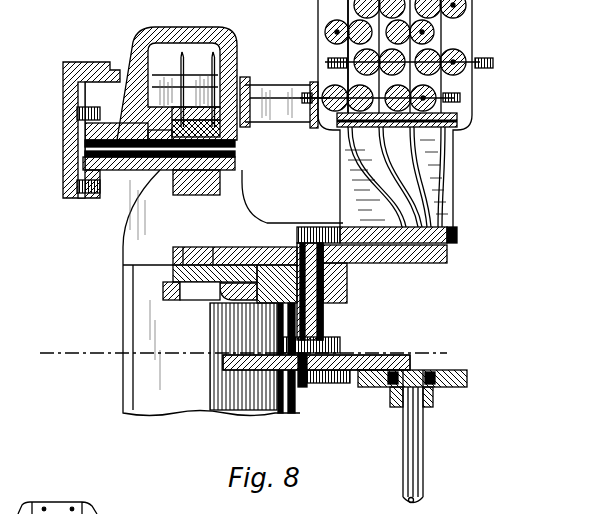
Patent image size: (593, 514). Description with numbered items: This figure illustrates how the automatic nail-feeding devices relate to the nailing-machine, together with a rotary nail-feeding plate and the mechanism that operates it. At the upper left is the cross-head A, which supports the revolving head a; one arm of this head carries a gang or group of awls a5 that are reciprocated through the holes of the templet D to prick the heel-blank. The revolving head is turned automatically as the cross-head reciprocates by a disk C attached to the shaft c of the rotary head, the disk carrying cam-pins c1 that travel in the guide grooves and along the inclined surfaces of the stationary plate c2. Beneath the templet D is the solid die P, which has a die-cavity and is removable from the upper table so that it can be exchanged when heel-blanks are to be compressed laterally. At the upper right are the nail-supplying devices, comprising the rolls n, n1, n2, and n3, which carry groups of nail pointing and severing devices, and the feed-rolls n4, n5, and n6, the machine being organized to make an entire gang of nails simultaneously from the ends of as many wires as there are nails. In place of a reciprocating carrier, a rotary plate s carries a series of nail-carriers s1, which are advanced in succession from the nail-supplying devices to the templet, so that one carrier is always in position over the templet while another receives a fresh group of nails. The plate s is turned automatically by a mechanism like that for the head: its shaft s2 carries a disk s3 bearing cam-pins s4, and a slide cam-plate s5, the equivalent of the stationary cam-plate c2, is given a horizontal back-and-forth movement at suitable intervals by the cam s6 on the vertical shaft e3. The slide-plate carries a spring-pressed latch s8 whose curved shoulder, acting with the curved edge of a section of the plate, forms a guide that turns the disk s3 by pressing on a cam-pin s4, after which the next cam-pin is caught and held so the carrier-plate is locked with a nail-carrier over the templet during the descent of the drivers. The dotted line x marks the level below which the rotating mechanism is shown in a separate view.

The cross-head A is at (133, 53).
The plate c2 is at (67, 143).
The shaft c is at (112, 168).
The cam-pins c1 is at (75, 200).
The disk C is at (92, 200).
The revolving head a is at (175, 185).
The gang or group of awls a5 is at (184, 68).
The roll n is at (338, 107).
The roll n1 is at (436, 90).
The roll n2 is at (348, 50).
The roll n3 is at (470, 56).
The feed-roll n4 is at (342, 22).
The feed-roll n5 is at (432, 30).
The feed-roll n6 is at (466, 9).
The rotary plate s is at (270, 247).
The nail-carriers s1 is at (173, 262).
The shaft s2 is at (325, 313).
The disk s3 is at (342, 343).
The cam-pins s4 is at (345, 355).
The slide cam-plate s5 is at (333, 378).
The cam s6 is at (455, 371).
The latch s8 is at (302, 388).
The vertical shaft e3 is at (424, 440).
The solid die P is at (173, 301).
The templet D is at (205, 284).
The dotted line x x is at (240, 351).